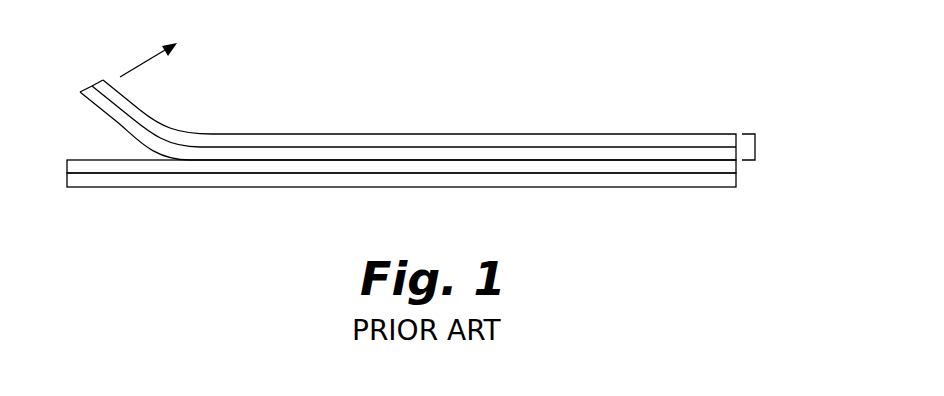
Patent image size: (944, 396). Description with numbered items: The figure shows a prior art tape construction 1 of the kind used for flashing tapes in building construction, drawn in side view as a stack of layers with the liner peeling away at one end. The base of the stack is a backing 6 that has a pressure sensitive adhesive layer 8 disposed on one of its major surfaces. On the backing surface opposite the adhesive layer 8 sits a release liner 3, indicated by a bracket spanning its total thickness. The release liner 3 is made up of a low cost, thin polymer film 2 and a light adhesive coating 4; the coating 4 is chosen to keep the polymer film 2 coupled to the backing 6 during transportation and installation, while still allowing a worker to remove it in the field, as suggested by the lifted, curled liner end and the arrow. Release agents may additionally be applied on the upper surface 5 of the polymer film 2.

The tape construction 1 is at (450, 139).
The polymer film 2 is at (693, 140).
The release liner 3 is at (757, 147).
The light adhesive coating 4 is at (587, 152).
The upper surface 5 is at (408, 100).
The backing 6 is at (620, 167).
The pressure sensitive adhesive layer 8 is at (700, 182).